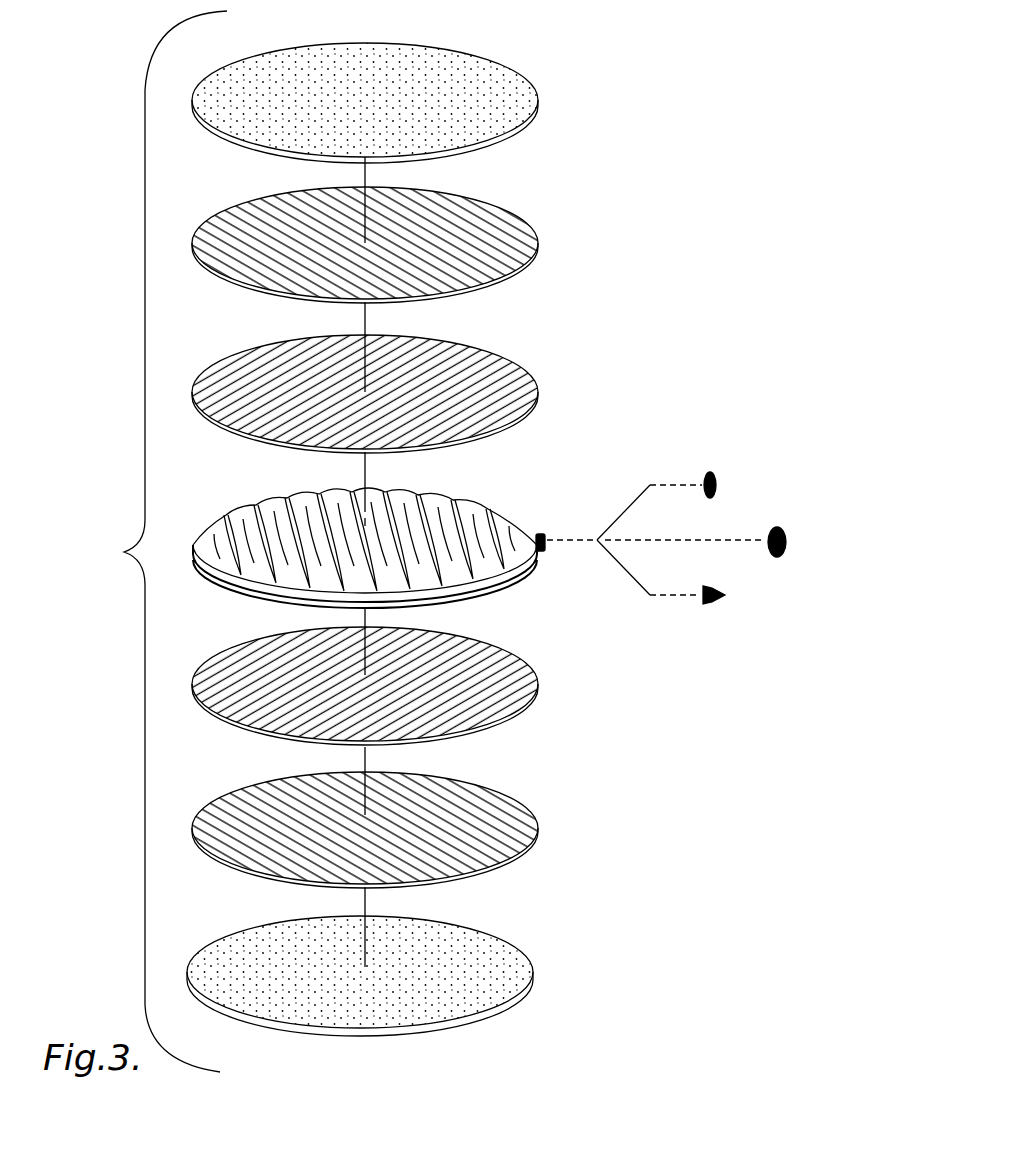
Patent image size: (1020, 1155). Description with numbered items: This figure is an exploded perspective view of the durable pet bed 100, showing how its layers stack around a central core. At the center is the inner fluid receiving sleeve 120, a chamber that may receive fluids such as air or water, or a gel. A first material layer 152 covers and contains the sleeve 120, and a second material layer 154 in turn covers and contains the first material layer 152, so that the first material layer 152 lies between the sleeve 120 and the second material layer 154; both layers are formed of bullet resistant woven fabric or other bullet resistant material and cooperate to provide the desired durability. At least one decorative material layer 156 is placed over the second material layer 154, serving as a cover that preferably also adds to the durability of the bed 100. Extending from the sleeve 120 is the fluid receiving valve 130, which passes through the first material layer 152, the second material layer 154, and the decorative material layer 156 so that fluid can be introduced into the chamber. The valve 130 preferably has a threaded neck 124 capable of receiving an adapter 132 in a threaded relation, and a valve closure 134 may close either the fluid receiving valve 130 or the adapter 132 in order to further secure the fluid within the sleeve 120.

The durable pet bed 100 is at (122, 552).
The inner fluid receiving sleeve 120 is at (500, 501).
The threaded neck 124 is at (543, 553).
The fluid receiving valve 130 is at (716, 478).
The adapter 132 is at (717, 606).
The valve closure 134 is at (783, 555).
The first material layer 152 is at (528, 378).
The second material layer 154 is at (539, 243).
The decorative material layer 156 is at (540, 100).